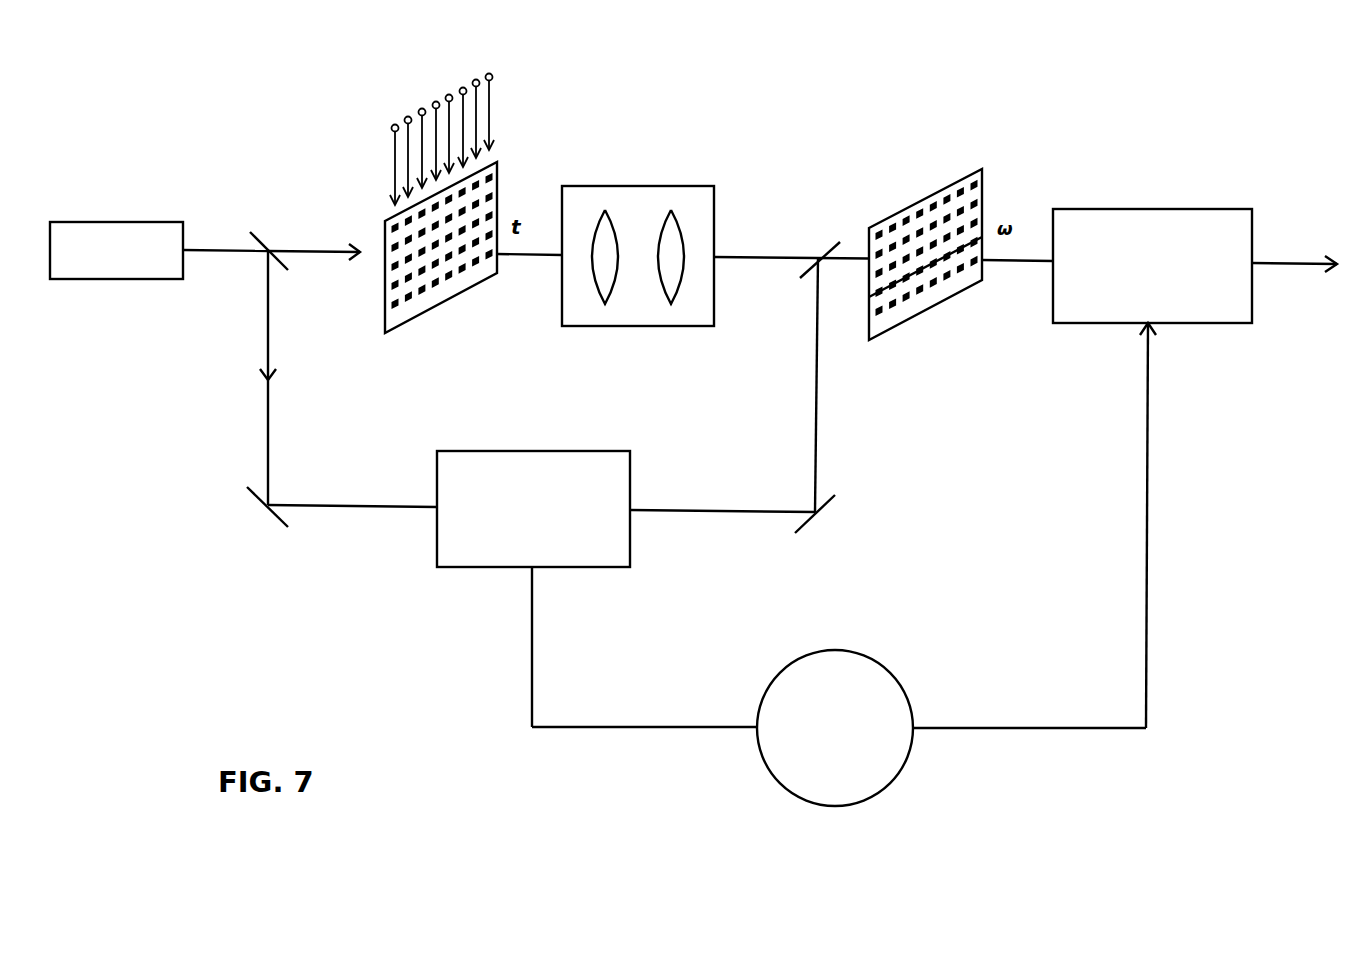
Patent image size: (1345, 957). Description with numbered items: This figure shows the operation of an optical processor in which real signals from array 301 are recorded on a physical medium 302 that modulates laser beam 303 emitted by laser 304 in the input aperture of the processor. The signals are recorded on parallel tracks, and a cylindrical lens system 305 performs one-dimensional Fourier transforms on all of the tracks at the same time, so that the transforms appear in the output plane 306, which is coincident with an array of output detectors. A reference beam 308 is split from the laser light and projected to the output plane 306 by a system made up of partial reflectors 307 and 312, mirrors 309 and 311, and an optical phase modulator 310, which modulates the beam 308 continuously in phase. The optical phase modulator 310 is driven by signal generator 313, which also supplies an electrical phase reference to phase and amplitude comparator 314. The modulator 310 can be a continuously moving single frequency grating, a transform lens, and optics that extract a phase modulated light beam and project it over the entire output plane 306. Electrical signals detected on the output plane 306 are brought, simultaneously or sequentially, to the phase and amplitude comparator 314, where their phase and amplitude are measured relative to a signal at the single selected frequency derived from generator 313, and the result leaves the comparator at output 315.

The array 301 is at (462, 78).
The physical medium 302 is at (497, 163).
The laser beam 303 is at (293, 250).
The laser 304 is at (112, 222).
The cylindrical lens system 305 is at (612, 186).
The output plane 306 is at (948, 186).
The partial reflector 307 is at (271, 238).
The reference beam 308 is at (268, 343).
The mirror 309 is at (256, 500).
The optical phase modulator 310 is at (455, 567).
The mirror 311 is at (818, 520).
The partial reflector 312 is at (833, 250).
The signal generator 313 is at (905, 758).
The phase and amplitude comparator 314 is at (1197, 323).
The output 315 is at (1263, 267).